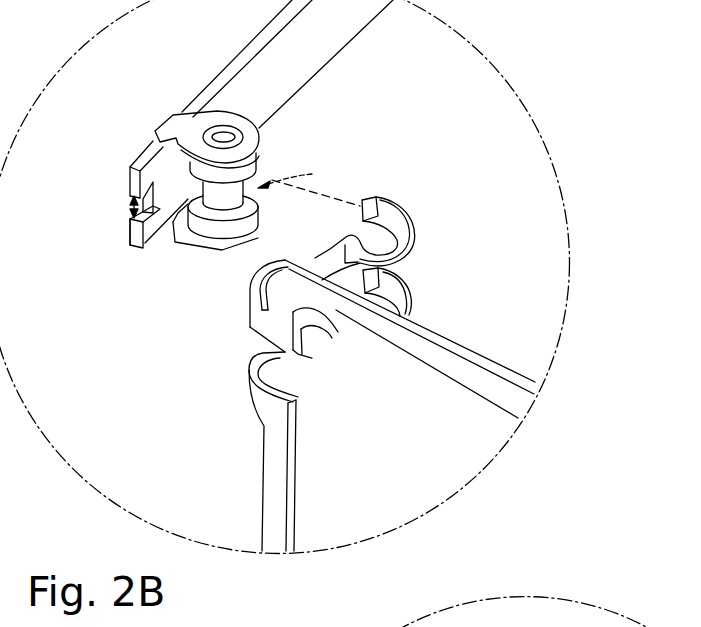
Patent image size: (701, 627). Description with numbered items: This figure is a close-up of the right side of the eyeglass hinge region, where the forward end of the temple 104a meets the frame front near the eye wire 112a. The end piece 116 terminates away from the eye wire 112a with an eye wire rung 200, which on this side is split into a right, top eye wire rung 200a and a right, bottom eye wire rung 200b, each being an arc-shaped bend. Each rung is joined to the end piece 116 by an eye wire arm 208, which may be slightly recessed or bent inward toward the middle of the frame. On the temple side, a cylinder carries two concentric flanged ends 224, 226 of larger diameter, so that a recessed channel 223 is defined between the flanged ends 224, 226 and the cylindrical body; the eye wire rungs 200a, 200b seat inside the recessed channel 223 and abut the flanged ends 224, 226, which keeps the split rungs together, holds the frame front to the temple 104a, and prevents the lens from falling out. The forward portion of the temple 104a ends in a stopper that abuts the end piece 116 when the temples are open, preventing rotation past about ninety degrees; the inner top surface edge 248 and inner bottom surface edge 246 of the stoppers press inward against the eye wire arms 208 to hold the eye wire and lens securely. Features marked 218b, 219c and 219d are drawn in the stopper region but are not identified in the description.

The temple 104a is at (263, 40).
The eye wire 112a is at (530, 383).
The end piece 116 is at (242, 417).
The eye wire rung 200 is at (433, 239).
The right, top eye wire rung 200a is at (410, 215).
The right, bottom eye wire rung 200b is at (410, 293).
The eye wire arm 208 is at (340, 243).
The tab 218b is at (125, 219).
The upper flange 219c is at (127, 188).
The lower flange 219d is at (130, 243).
The recessed channel 223 is at (309, 183).
The flanged end 224 is at (252, 168).
The flanged end 226 is at (228, 226).
The inner, bottom surface edge of the stoppers 246 is at (167, 218).
The inner, top surface edge of the stoppers 248 is at (127, 203).